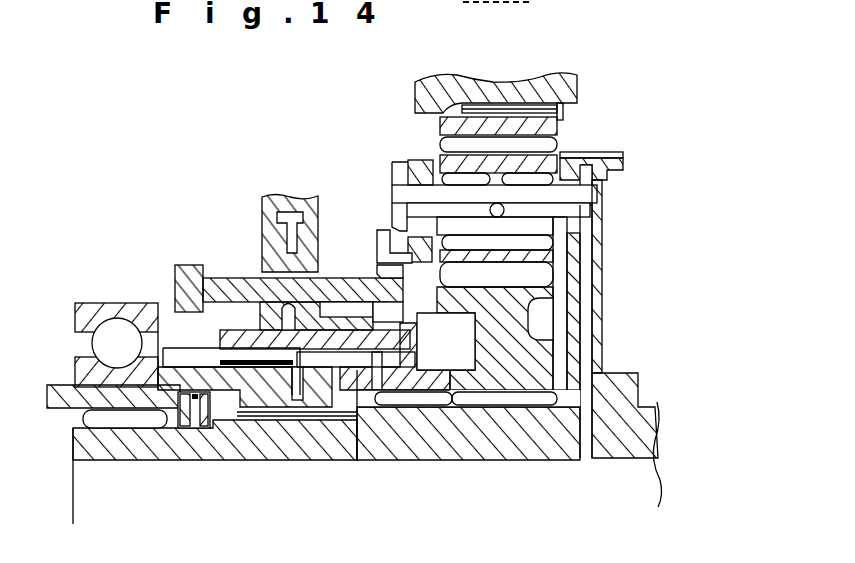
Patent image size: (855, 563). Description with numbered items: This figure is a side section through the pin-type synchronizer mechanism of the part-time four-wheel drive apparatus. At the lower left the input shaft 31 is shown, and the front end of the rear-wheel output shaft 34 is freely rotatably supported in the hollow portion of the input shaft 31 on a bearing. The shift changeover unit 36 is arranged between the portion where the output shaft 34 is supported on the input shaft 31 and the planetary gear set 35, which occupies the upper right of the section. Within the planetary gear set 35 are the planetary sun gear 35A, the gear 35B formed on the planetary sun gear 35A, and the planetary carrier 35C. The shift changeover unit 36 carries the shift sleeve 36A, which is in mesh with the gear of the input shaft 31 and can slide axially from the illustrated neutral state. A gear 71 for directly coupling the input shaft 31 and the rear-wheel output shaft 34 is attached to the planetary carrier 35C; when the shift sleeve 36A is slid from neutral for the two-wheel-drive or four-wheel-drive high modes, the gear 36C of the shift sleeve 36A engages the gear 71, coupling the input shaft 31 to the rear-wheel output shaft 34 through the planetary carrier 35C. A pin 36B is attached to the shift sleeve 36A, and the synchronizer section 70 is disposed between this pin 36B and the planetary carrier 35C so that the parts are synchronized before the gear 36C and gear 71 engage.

The input shaft 31 is at (62, 382).
The rear-wheel output shaft 34 is at (80, 441).
The planetary gear set 35 is at (594, 122).
The planetary sun gear 35A is at (572, 298).
The gear of planetary sun gear 35B is at (357, 460).
The planetary carrier 35C is at (410, 115).
The shift changeover unit 36 is at (238, 192).
The shift sleeve 36A is at (235, 325).
The pin 36B is at (237, 277).
The gear of shift sleeve 36C is at (403, 273).
The synchronizer section 70 is at (366, 263).
The gear for directly coupling input shaft and rear-wheel output shaft 71 is at (376, 256).